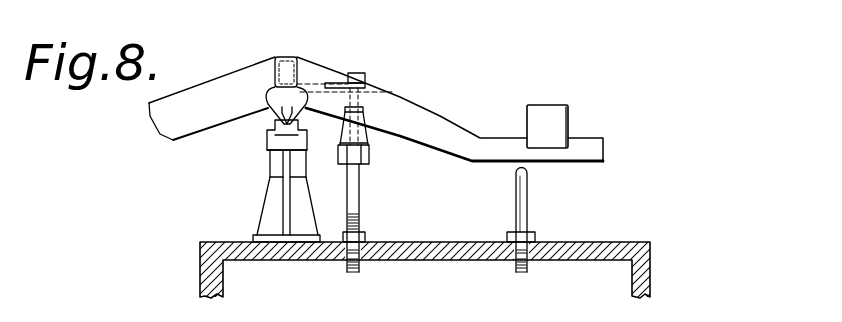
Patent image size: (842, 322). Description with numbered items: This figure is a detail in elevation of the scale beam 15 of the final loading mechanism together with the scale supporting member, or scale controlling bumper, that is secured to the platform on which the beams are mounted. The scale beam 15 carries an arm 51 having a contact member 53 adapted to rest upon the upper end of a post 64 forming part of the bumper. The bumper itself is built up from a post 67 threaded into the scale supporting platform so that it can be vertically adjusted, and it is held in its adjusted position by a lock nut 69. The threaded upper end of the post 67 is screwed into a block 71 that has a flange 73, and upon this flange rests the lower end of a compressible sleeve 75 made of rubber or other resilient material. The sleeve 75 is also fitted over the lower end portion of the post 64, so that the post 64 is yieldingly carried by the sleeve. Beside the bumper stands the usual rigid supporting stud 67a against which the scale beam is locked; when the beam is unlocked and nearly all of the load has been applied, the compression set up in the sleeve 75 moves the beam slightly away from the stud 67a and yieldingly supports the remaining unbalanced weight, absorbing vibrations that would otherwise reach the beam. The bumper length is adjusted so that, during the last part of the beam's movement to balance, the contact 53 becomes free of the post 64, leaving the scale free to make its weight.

The scale beam 15 is at (433, 127).
The arm 51 is at (363, 73).
The contact member 53 is at (371, 85).
The post 64 is at (392, 92).
The post 67 is at (359, 198).
The rigid supporting stud 67a is at (522, 205).
The lock nut 69 is at (366, 236).
The block 71 is at (369, 158).
The flange 73 is at (369, 140).
The compressible sleeve 75 is at (345, 136).